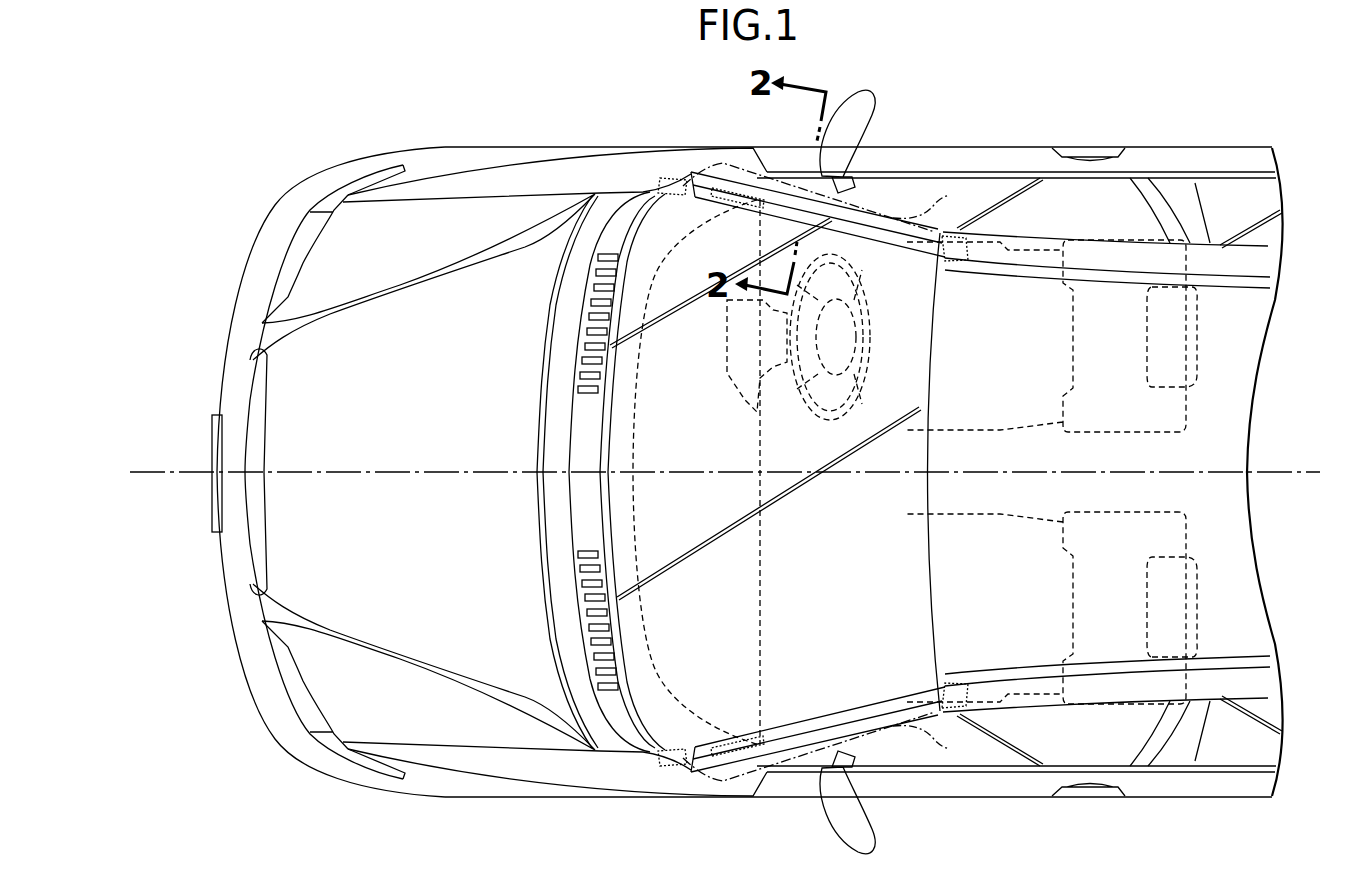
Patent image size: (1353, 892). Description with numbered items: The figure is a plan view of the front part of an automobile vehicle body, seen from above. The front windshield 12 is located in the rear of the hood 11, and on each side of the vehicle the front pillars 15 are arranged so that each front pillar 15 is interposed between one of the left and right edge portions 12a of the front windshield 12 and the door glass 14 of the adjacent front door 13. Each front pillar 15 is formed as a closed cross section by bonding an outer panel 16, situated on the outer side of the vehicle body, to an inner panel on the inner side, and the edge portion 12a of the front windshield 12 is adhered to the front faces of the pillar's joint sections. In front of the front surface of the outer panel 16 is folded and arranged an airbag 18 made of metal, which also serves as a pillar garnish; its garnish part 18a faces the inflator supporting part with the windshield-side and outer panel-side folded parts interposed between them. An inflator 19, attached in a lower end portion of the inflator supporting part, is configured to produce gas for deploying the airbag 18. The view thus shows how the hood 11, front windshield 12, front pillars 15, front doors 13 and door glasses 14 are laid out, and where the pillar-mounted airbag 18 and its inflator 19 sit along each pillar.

The hood 11 is at (452, 215).
The front windshield 12 is at (648, 423).
The edge portion of the front windshield 12a is at (694, 203).
The front door 13 is at (1027, 152).
The door glass 14 is at (1122, 203).
The front pillar 15 is at (887, 208).
The outer panel 16 is at (907, 207).
The airbag 18 is at (796, 190).
The garnish part 18a is at (867, 225).
The inflator 19 is at (728, 200).